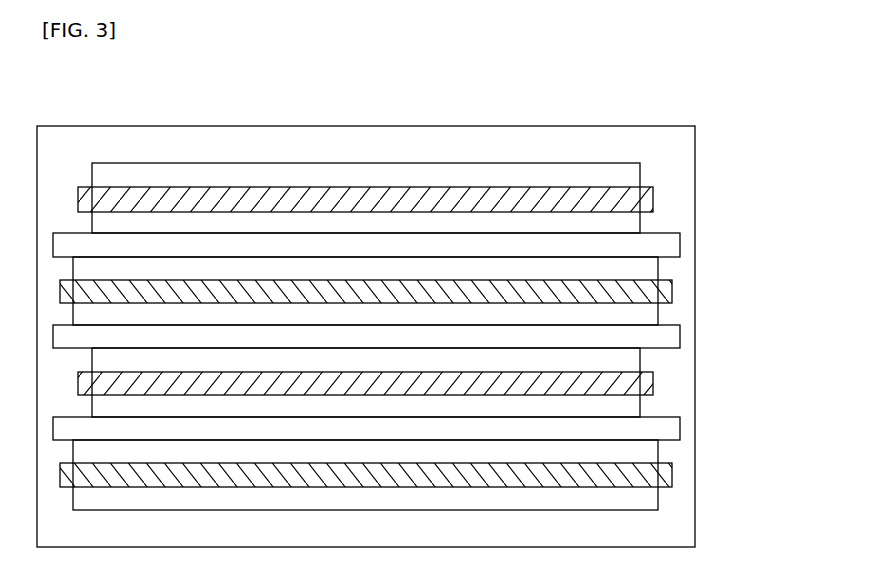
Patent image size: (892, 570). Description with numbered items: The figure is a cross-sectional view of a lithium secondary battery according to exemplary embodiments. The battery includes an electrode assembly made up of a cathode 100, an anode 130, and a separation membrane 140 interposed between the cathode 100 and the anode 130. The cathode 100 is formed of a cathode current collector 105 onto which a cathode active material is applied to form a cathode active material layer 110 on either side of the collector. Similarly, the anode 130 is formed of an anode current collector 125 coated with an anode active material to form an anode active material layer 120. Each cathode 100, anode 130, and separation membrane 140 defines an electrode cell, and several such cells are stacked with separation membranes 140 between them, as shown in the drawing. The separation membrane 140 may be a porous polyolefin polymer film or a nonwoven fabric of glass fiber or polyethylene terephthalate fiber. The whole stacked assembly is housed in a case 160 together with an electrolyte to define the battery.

The cathode 100 is at (457, 290).
The cathode current collector 105 is at (653, 203).
The cathode active material layer 110 is at (633, 176).
The anode active material layer 120 is at (658, 266).
The anode current collector 125 is at (672, 292).
The anode 130 is at (448, 383).
The separation membrane 140 is at (557, 243).
The case 160 is at (695, 478).